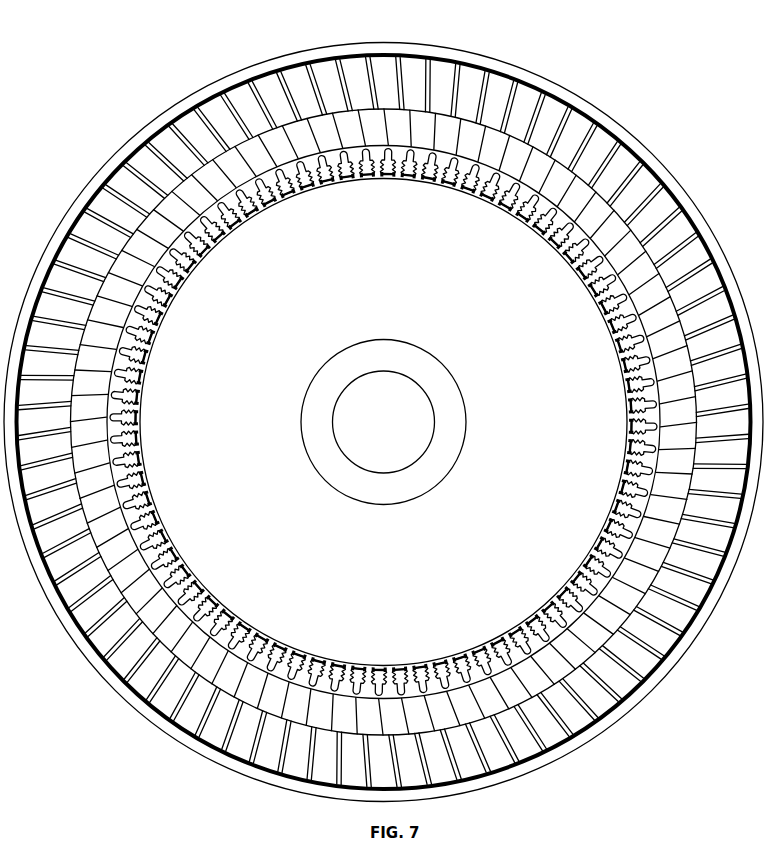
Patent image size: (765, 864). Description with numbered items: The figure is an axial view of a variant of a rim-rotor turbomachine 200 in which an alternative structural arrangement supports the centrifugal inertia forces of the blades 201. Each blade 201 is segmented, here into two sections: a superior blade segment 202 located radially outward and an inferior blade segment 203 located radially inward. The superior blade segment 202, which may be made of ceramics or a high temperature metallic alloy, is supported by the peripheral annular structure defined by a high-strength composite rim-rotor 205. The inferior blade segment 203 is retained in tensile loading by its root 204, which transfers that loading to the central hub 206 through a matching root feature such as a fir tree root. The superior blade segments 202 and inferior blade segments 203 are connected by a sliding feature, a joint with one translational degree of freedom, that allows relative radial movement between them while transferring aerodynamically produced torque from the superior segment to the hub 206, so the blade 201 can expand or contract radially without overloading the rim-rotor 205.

The rim-rotor turbomachine 200 is at (691, 163).
The blade 201 is at (417, 78).
The superior blade segment 202 is at (412, 120).
The inferior blade segment 203 is at (398, 155).
The root 204 is at (432, 122).
The rim-rotor 205 is at (524, 71).
The hub 206 is at (461, 237).